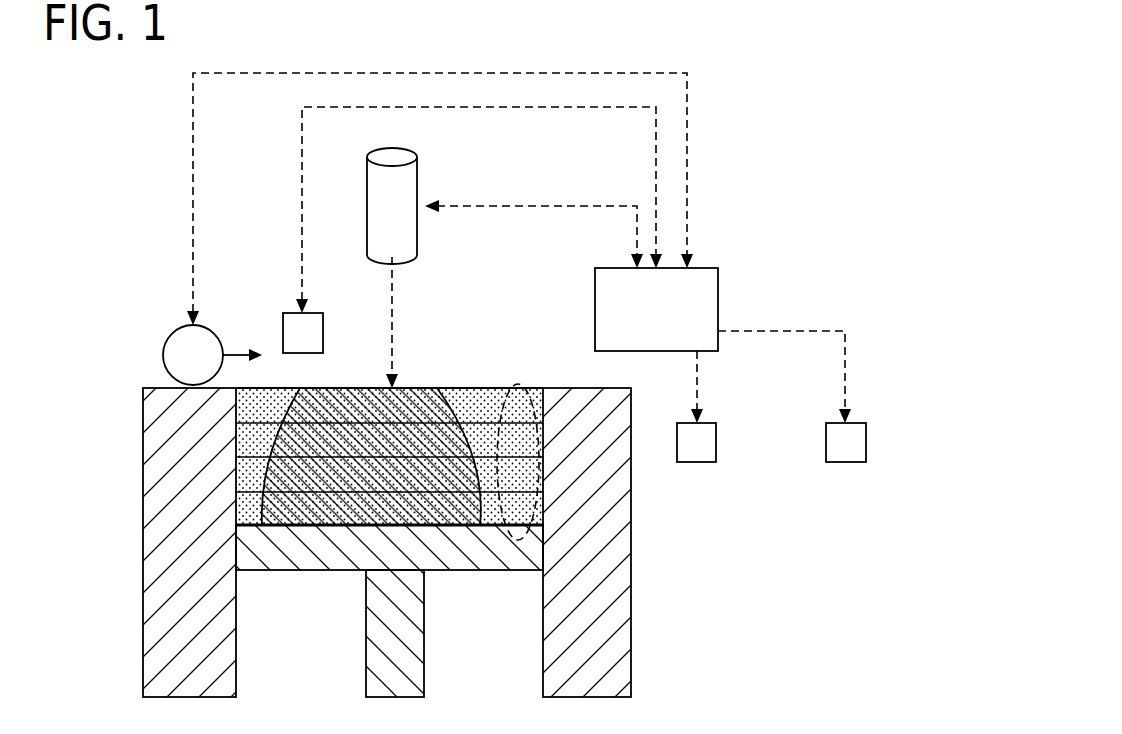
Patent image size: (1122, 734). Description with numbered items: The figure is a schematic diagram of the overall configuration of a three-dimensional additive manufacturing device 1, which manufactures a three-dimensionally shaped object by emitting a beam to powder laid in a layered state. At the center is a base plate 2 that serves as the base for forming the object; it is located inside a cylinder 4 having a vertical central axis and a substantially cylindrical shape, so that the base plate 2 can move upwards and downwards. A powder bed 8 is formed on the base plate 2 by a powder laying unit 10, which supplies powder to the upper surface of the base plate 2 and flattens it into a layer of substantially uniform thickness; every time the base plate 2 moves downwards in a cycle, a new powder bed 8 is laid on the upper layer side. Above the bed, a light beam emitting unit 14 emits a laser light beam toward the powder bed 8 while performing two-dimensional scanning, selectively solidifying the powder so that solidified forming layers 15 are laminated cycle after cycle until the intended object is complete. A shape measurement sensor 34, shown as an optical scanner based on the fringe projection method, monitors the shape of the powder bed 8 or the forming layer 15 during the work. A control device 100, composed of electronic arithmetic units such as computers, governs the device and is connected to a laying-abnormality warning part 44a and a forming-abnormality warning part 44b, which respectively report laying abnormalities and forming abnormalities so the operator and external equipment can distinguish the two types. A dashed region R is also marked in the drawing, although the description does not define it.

The three-dimensional additive manufacturing device 1 is at (774, 128).
The base plate 2 is at (318, 572).
The cylinder 4 is at (143, 548).
The powder bed 8 is at (463, 388).
The powder laying unit 10 is at (215, 332).
The light beam emitting unit 14 is at (414, 150).
The forming layer 15 is at (413, 388).
The shape measurement sensor 34 is at (323, 326).
The laying-abnormality warning part 44a is at (716, 440).
The forming-abnormality warning part 44b is at (866, 440).
The control device 100 is at (718, 308).
The region R is at (527, 383).